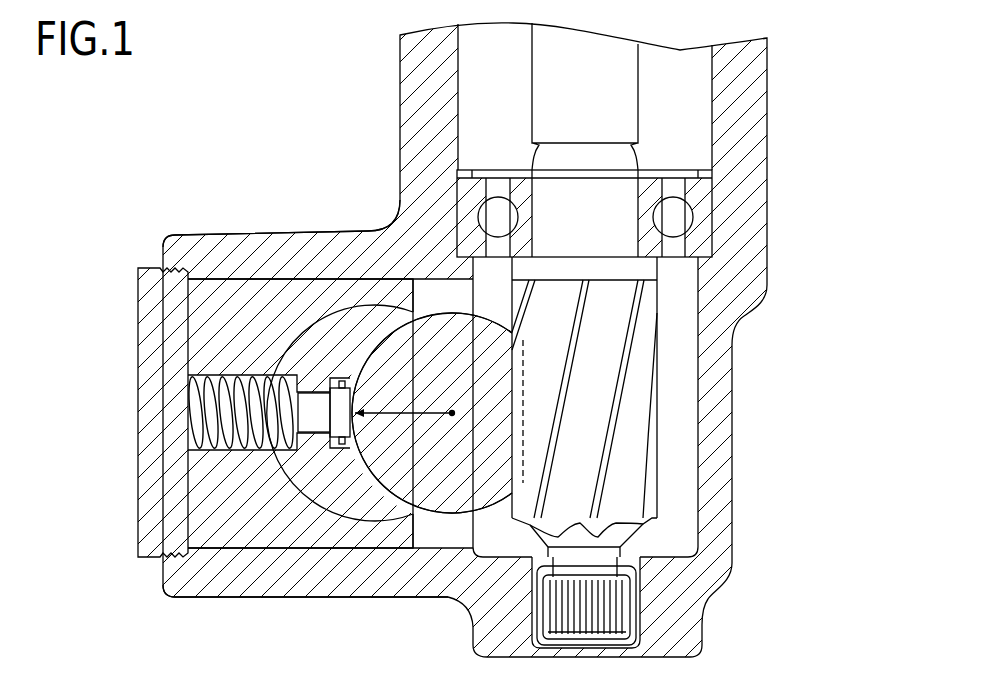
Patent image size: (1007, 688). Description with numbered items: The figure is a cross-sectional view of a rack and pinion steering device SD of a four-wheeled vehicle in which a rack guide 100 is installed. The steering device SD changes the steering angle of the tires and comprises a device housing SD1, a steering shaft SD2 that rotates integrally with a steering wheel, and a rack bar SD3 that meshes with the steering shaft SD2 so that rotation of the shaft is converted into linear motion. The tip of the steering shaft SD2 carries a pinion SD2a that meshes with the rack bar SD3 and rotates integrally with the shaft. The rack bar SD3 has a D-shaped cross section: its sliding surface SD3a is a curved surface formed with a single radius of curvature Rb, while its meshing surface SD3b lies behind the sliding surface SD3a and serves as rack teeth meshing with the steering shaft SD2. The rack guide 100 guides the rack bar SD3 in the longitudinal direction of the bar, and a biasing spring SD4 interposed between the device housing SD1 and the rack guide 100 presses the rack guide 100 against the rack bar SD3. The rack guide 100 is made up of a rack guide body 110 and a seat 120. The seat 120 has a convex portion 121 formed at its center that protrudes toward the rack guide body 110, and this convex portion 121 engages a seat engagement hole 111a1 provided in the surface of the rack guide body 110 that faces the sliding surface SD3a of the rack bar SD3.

The rack and pinion steering device SD is at (209, 172).
The device housing SD1 is at (420, 62).
The steering shaft SD2 is at (625, 89).
The pinion SD2a is at (647, 383).
The rack bar SD3 is at (413, 340).
The sliding surface SD3a is at (403, 332).
The meshing surface SD3b is at (517, 505).
The biasing spring SD4 is at (188, 396).
The radius of curvature Rb is at (405, 402).
The rack guide 100 is at (395, 622).
The rack guide body 110 is at (288, 527).
The seat 120 is at (393, 503).
The convex portion 121 is at (300, 428).
The seat engagement hole 111a1 is at (314, 400).